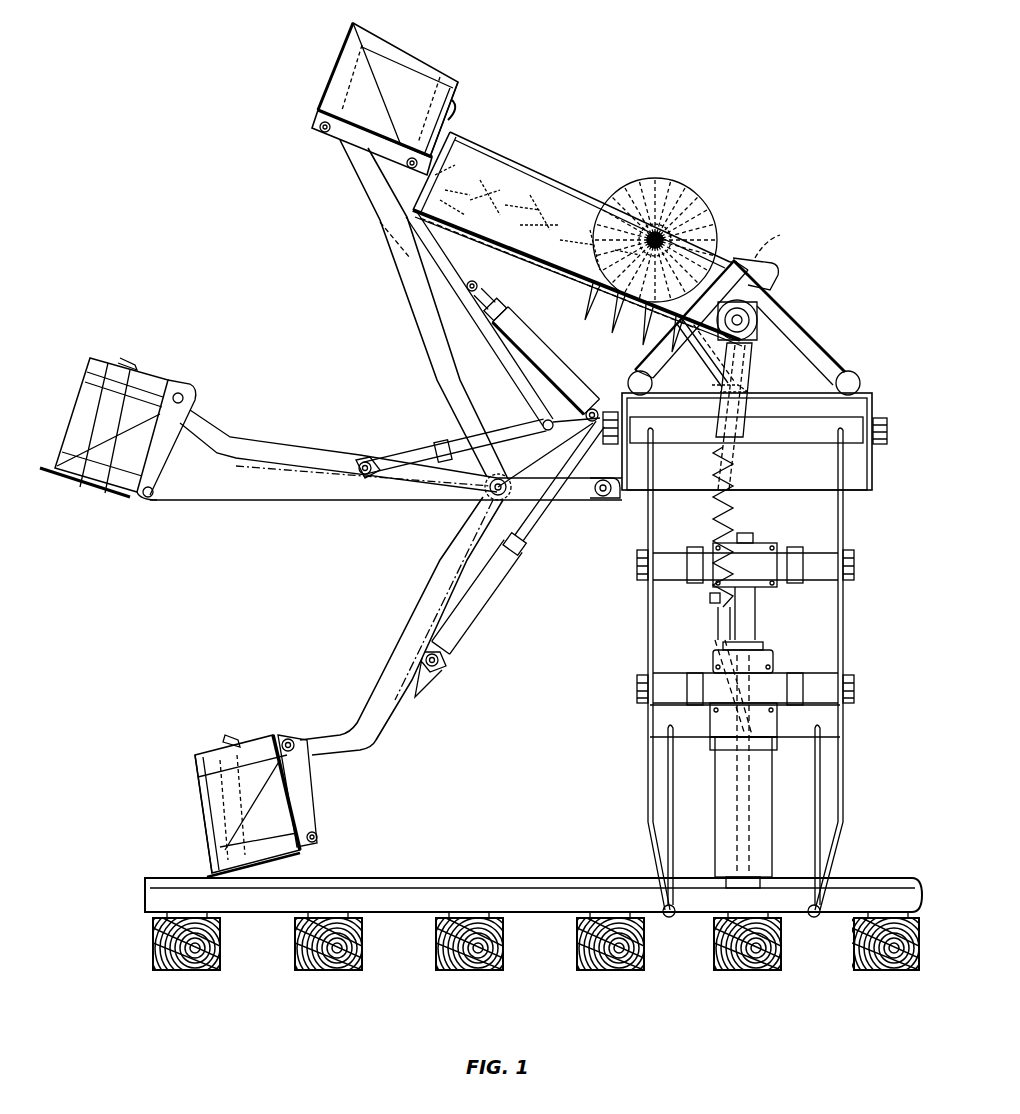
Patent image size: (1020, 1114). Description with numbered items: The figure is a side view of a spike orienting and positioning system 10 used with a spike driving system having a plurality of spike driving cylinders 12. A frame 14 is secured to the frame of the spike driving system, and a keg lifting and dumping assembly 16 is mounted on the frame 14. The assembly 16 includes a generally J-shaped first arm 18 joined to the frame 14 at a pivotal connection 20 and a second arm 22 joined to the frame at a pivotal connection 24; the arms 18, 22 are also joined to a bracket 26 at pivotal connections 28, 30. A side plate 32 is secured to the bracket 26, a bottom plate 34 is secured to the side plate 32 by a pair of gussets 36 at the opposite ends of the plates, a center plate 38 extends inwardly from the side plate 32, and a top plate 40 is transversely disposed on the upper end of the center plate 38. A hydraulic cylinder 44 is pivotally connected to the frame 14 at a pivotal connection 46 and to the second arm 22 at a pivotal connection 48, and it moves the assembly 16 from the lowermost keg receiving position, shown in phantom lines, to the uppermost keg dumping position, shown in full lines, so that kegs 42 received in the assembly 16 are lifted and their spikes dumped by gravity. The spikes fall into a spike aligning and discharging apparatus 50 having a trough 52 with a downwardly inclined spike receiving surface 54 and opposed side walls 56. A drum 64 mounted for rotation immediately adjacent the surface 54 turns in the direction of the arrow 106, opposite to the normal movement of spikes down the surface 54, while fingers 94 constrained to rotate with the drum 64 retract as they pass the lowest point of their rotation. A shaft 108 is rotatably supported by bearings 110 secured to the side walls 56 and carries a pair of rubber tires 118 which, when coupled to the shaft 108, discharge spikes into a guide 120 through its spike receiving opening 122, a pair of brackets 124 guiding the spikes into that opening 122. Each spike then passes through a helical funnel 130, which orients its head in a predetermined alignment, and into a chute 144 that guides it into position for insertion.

The spike orienting and positioning system 10 is at (305, 281).
The spike driving cylinders 12 is at (702, 799).
The frame 14 is at (640, 490).
The keg lifting and dumping assembly 16 is at (355, 332).
The first arm 18 is at (440, 385).
The pivotal connection 20 is at (482, 497).
The second arm 22 is at (522, 414).
The pivotal connection 24 is at (600, 500).
The bracket 26 is at (305, 795).
The pivotal connection 28 is at (290, 738).
The pivotal connection 30 is at (320, 840).
The side plate 32 is at (345, 152).
The bottom plate 34 is at (333, 72).
The gussets 36 is at (368, 95).
The center plate 38 is at (245, 792).
The top plate 40 is at (452, 112).
The kegs 42 is at (410, 55).
The hydraulic cylinder 44 is at (535, 340).
The pivotal connection 46 is at (578, 385).
The pivotal connection 48 is at (440, 660).
The spike aligning and discharging apparatus 50 is at (576, 150).
The trough 52 is at (529, 146).
The spike receiving surface 54 is at (495, 248).
The side walls 56 is at (578, 182).
The drum 64 is at (660, 182).
The fingers 94 is at (559, 258).
The arrow 106 is at (740, 192).
The shaft 108 is at (770, 324).
The bearings 110 is at (757, 316).
The rubber tires 118 is at (775, 238).
The guide 120 is at (765, 389).
The spike receiving opening 122 is at (692, 366).
The brackets 124 is at (685, 340).
The helical funnel 130 is at (735, 518).
The chute 144 is at (712, 640).